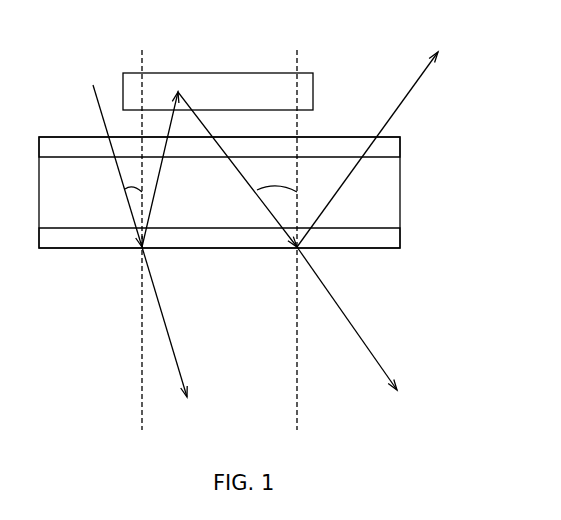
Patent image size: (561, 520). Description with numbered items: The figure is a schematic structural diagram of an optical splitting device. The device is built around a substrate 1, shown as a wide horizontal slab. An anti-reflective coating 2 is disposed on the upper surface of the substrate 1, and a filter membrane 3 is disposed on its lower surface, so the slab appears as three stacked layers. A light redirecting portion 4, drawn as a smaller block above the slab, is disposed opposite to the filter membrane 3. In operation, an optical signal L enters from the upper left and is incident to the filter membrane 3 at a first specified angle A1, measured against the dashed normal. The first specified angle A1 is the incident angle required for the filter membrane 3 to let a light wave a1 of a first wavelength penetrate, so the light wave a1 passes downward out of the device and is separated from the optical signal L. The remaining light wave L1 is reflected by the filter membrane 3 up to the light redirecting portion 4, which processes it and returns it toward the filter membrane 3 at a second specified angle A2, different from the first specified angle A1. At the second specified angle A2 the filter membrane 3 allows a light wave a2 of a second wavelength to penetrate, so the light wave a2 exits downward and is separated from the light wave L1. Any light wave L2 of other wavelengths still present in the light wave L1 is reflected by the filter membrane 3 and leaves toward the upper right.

The substrate 1 is at (385, 187).
The anti-reflective coating 2 is at (385, 146).
The filter membrane 3 is at (377, 240).
The light redirecting portion 4 is at (303, 90).
The optical signal L is at (106, 157).
The light wave L1 is at (219, 169).
The light wave of other wavelengths L2 is at (367, 149).
The light wave of a first wavelength a1 is at (174, 322).
The light wave of a second wavelength a2 is at (355, 318).
The first specified angle A1 is at (125, 189).
The second specified angle A2 is at (256, 189).